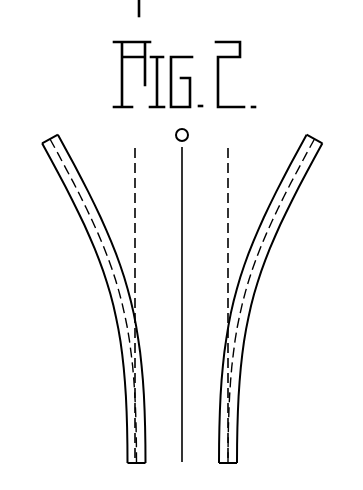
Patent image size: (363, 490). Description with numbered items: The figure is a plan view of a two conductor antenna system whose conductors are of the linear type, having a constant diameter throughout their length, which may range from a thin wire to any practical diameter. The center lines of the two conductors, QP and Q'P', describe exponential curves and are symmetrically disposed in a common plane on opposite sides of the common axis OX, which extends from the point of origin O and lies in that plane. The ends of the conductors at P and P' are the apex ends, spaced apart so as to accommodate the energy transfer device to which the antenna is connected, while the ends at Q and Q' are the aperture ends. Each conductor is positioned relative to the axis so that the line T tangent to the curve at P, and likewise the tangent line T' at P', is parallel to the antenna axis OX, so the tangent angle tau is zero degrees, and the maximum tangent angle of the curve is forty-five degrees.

The X axis X is at (179, 318).
The point of origin O is at (182, 135).
The tangent line T' is at (138, 292).
The tangent line TP T is at (228, 296).
The aperture end Q' is at (86, 283).
The apex end P' is at (98, 314).
The aperture end Q is at (281, 290).
The apex end P is at (267, 314).